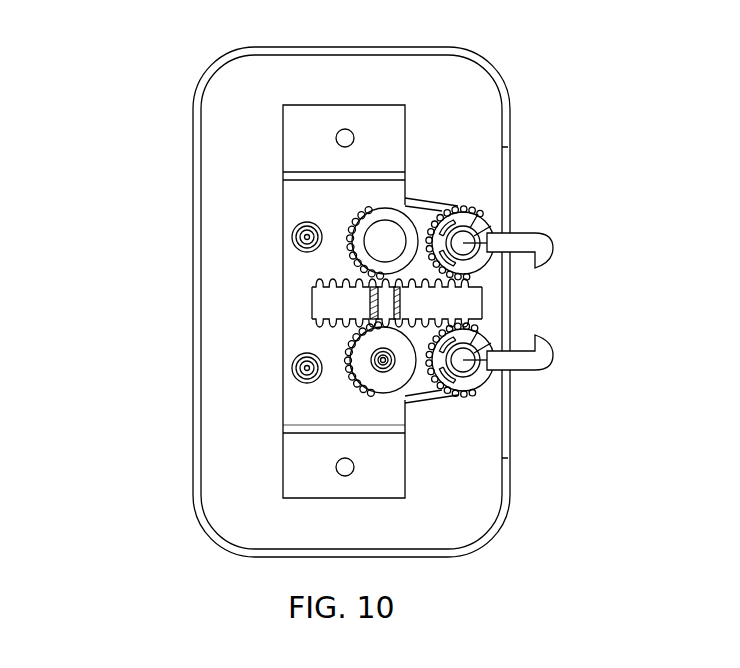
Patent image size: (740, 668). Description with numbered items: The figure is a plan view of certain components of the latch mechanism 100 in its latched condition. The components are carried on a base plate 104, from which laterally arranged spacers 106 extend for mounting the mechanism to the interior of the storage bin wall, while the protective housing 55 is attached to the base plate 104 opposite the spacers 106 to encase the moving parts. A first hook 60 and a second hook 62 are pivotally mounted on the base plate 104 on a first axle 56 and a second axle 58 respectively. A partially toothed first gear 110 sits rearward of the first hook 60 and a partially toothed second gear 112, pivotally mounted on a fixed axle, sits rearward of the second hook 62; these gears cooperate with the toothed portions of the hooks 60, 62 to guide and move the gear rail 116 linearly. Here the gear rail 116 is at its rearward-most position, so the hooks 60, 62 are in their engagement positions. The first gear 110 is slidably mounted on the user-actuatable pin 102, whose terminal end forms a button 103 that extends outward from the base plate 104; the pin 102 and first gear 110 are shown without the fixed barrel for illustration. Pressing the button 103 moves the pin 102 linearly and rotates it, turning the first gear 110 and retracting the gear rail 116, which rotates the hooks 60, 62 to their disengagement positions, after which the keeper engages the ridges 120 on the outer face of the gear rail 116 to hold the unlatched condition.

The latch mechanism 100 is at (187, 55).
The protective housing 55 is at (510, 518).
The spacers 106 is at (303, 127).
The base plate 104 is at (303, 410).
The user-actuatable pin 102 is at (352, 221).
The button 103 is at (380, 240).
The first gear 110 is at (370, 265).
The ridges 120 is at (318, 287).
The second gear 112 is at (360, 350).
The gear rail 116 is at (468, 299).
The second axle 58 is at (498, 238).
The first axle 56 is at (498, 368).
The second hook 62 is at (551, 250).
The first hook 60 is at (551, 358).